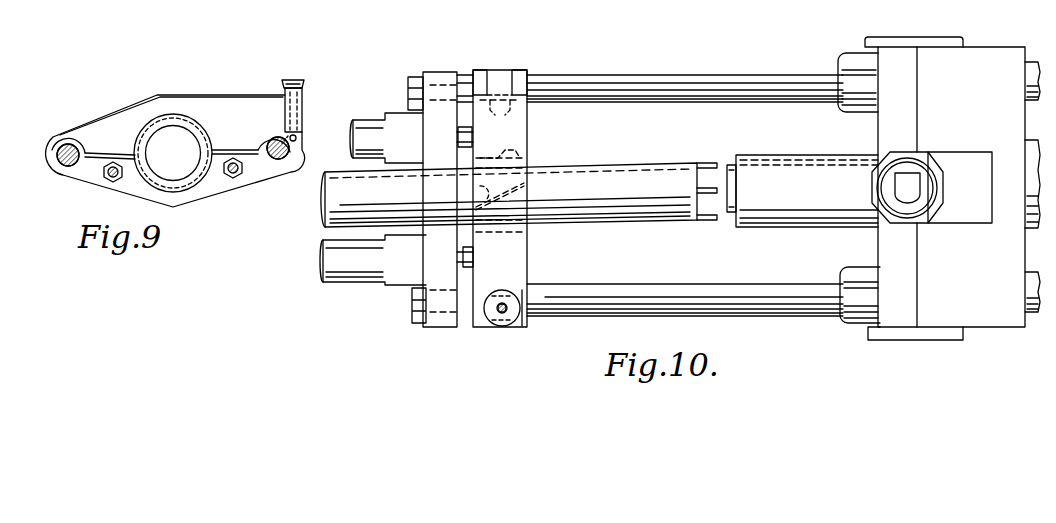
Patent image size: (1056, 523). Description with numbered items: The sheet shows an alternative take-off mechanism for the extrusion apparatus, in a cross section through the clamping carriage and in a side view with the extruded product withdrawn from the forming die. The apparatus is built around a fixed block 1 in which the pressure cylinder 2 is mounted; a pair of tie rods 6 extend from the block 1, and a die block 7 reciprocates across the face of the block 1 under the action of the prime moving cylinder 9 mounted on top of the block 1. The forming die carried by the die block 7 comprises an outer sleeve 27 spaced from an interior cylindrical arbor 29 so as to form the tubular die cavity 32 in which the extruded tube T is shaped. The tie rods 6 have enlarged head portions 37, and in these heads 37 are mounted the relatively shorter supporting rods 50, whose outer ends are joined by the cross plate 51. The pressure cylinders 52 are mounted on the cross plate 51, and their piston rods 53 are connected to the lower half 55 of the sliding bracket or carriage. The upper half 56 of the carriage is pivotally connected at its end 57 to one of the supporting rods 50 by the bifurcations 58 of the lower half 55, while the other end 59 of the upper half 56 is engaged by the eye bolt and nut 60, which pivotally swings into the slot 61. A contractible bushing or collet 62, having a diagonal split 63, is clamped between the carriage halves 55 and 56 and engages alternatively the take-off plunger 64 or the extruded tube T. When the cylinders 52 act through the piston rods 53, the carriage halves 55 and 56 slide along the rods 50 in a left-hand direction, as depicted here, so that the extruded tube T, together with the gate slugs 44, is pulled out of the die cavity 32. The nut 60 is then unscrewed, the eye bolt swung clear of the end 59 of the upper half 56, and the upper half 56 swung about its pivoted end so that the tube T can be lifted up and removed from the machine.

In FIG. 10, the fixed block 1 is at (981, 52).
In FIG. 10, the pressure cylinder 2 is at (1030, 178).
In FIG. 10, the tie rods 6 is at (1028, 73).
In FIG. 10, the die block 7 is at (905, 105).
In FIG. 10, the prime moving cylinder 9 is at (923, 172).
In FIG. 10, the outer sleeve 27 is at (773, 155).
In FIG. 10, the cylindrical arbor 29 is at (730, 165).
In FIG. 10, the tubular die cavity 32 is at (815, 158).
In FIG. 10, the enlarged head portions 37 is at (843, 60).
In FIG. 10, the gate slugs 44 is at (708, 160).
In FIG. 9, the supporting rods 50 is at (52, 161).
In FIG. 10, the supporting rods 50 is at (660, 95).
In FIG. 10, the cross plate 51 is at (440, 199).
In FIG. 10, the pressure cylinders 52 is at (369, 126).
In FIG. 9, the piston rods 53 is at (109, 178).
In FIG. 10, the piston rods 53 is at (460, 136).
In FIG. 9, the lower carriage half 55 is at (226, 188).
In FIG. 9, the upper carriage half 56 is at (118, 118).
In FIG. 10, the upper carriage half 56 is at (515, 126).
In FIG. 10, the pivoted end 57 is at (497, 70).
In FIG. 9, the bifurcations 58 is at (60, 140).
In FIG. 10, the bifurcations 58 is at (477, 70).
In FIG. 9, the other end 59 is at (303, 109).
In FIG. 10, the other end 59 is at (523, 323).
In FIG. 9, the eye bolt and nut 60 is at (298, 80).
In FIG. 10, the eye bolt and nut 60 is at (503, 328).
In FIG. 9, the slot 61 is at (308, 96).
In FIG. 10, the slot 61 is at (521, 290).
In FIG. 9, the contractible collet 62 is at (200, 125).
In FIG. 10, the contractible collet 62 is at (528, 147).
In FIG. 10, the diagonal split 63 is at (464, 184).
In FIG. 9, the take-off plunger 64 is at (174, 130).
In FIG. 10, the extruded tube T is at (590, 166).